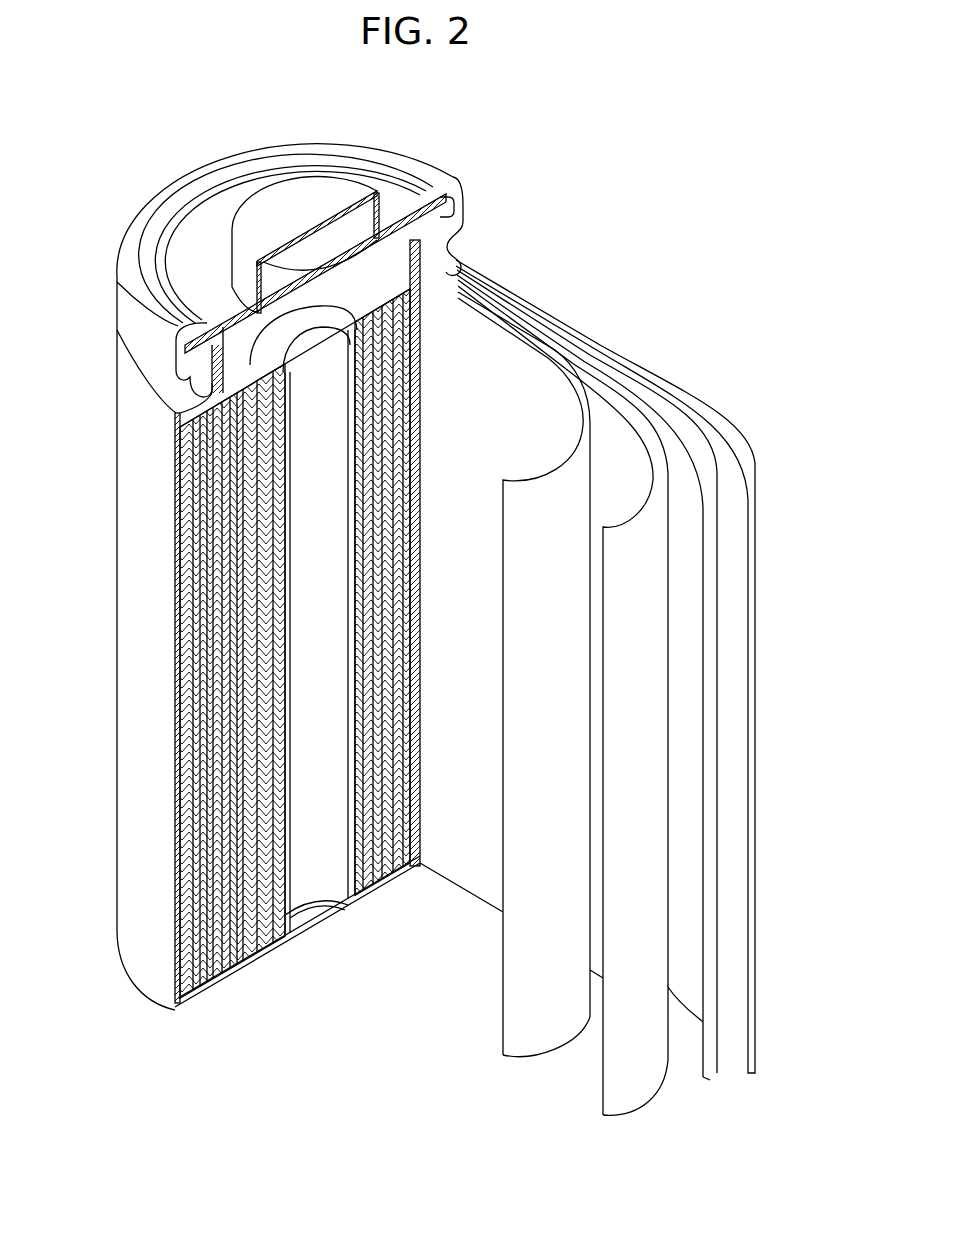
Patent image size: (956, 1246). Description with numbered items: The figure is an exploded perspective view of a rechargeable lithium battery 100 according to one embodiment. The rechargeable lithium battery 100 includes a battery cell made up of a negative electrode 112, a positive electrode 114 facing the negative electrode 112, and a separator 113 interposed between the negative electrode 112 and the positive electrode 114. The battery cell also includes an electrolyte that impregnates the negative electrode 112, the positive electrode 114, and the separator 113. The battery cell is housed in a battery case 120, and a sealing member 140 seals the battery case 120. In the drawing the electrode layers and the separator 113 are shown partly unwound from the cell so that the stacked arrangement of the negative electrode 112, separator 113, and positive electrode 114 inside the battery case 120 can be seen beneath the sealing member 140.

The rechargeable lithium battery 100 is at (438, 150).
The negative electrode 112 is at (750, 465).
The separator 113 is at (487, 345).
The positive electrode 114 is at (608, 403).
The battery case 120 is at (132, 672).
The sealing member 140 is at (275, 198).